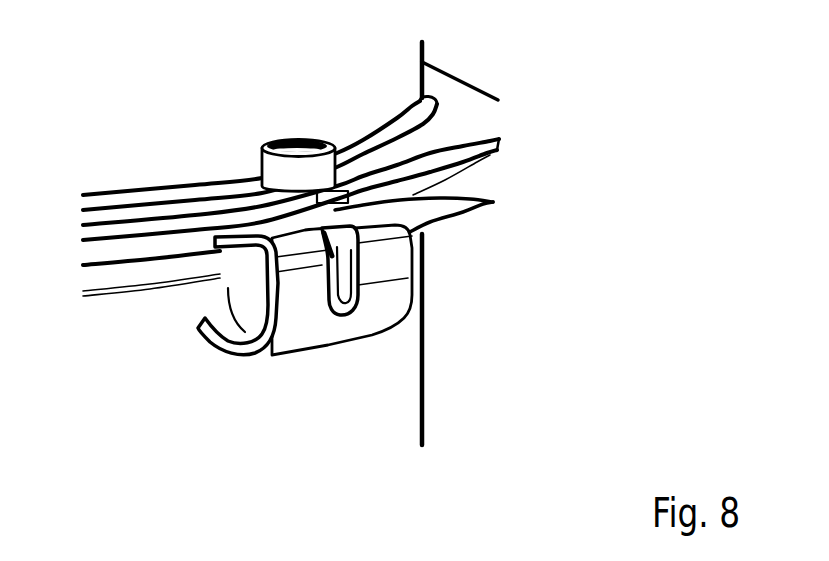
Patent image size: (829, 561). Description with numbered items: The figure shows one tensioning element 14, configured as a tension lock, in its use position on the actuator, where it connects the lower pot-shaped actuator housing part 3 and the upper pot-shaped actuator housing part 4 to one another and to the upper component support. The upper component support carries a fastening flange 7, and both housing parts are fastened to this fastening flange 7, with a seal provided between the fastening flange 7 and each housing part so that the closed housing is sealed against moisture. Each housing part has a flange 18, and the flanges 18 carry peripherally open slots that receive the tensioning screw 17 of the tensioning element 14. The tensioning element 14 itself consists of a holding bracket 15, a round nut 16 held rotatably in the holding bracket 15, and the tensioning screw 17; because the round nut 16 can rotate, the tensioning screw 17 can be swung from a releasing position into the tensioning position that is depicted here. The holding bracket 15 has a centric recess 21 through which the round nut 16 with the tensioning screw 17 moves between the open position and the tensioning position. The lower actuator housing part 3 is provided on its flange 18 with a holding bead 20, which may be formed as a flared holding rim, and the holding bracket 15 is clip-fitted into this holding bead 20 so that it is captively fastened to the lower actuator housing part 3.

The lower pot-shaped actuator housing part 3 is at (387, 420).
The upper pot-shaped actuator housing part 4 is at (393, 78).
The fastening flange 7 is at (492, 147).
The tensioning element 14 is at (582, 155).
The holding bracket 15 is at (311, 318).
The round nut 16 is at (243, 292).
The tensioning screw 17 is at (280, 166).
The flange 18 is at (477, 115).
The holding bead 20 is at (495, 208).
The centric recess 21 is at (410, 307).